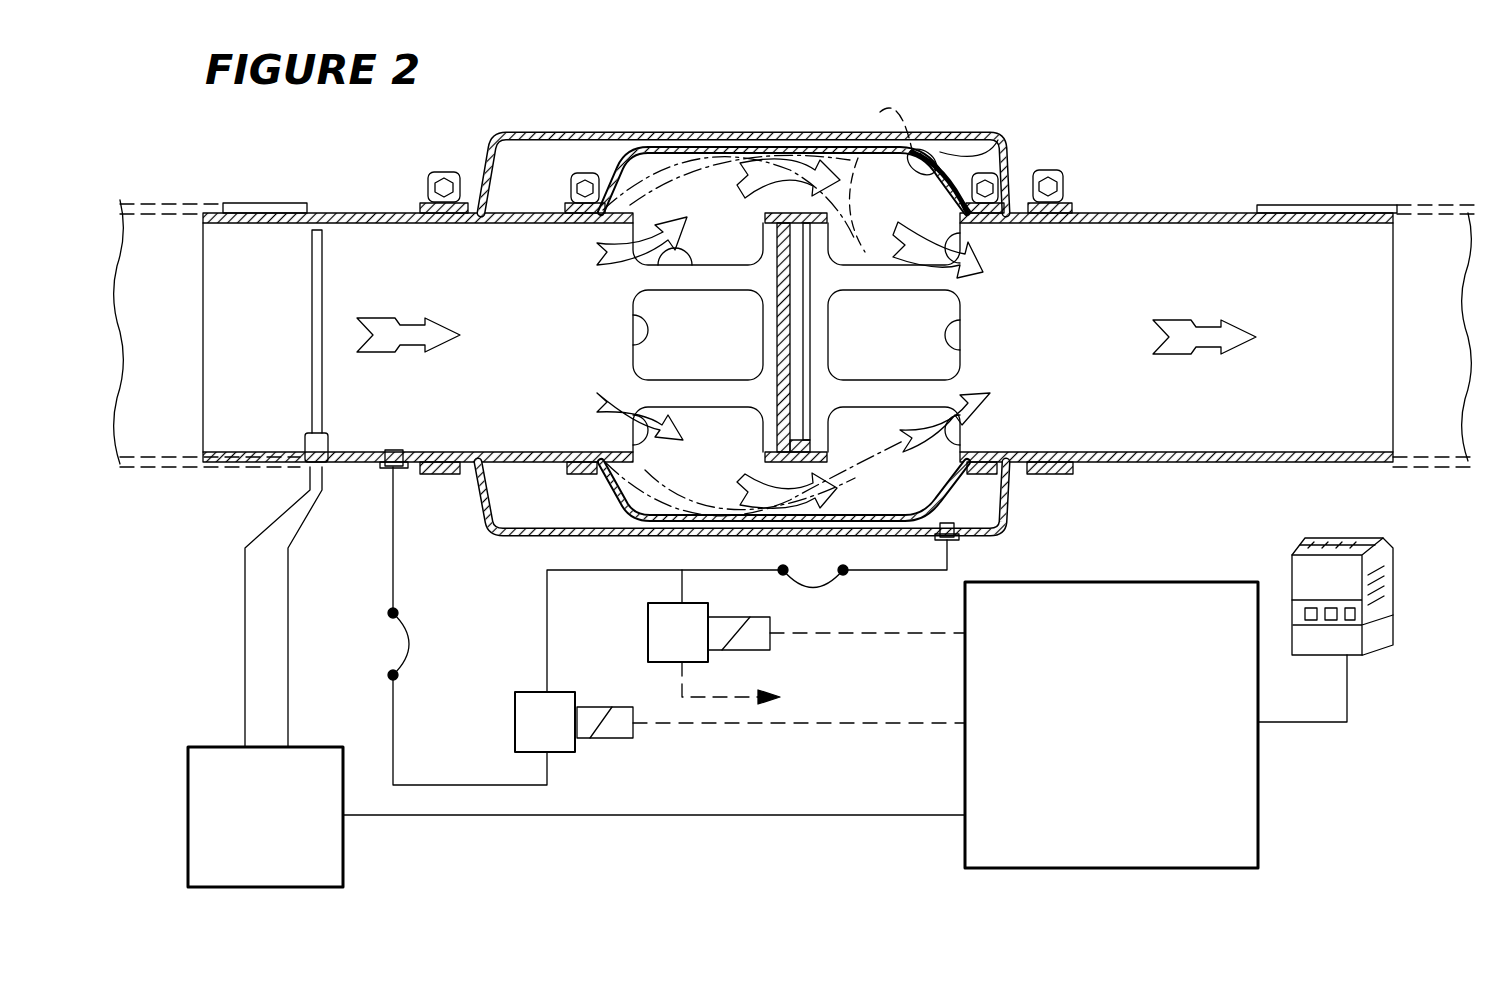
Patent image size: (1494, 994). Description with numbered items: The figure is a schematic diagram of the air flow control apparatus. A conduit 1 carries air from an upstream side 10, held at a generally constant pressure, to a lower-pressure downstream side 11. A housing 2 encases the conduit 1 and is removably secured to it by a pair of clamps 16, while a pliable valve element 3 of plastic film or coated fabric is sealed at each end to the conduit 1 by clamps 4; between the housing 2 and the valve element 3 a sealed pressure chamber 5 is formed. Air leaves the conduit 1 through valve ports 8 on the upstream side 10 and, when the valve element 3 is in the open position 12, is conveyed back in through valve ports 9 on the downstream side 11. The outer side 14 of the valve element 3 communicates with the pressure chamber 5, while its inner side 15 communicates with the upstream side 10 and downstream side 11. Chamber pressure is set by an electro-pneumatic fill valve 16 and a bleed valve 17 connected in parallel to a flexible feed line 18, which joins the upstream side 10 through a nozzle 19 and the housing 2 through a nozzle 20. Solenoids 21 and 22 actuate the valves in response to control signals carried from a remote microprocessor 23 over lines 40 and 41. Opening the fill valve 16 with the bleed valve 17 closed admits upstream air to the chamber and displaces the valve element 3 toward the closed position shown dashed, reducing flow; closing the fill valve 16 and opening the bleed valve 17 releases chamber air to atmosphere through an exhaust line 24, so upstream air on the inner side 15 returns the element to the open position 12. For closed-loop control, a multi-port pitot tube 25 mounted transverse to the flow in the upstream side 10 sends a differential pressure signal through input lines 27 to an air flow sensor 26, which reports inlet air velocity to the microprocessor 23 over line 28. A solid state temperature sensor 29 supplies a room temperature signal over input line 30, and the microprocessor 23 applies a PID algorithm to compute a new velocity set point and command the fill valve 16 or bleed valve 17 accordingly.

The conduit 1 is at (1160, 215).
The housing 2 is at (663, 133).
The valve element 3 is at (603, 210).
The clamps 4 is at (577, 177).
The pressure chamber 5 is at (528, 198).
The valve ports 8 is at (683, 260).
The valve ports 9 is at (963, 243).
The upstream side 10 is at (262, 354).
The downstream side 11 is at (1364, 357).
The open position 12 is at (860, 138).
The outer side 14 is at (940, 152).
The inner side 15 is at (915, 155).
The fill valve 16 is at (437, 170).
The bleed valve 17 is at (648, 640).
The feed line 18 is at (393, 580).
The nozzle 19 is at (385, 470).
The nozzle 20 is at (955, 540).
The electric solenoid 21 is at (597, 740).
The electric solenoid 22 is at (722, 652).
The microprocessor 23 is at (1183, 582).
The exhaust line 24 is at (680, 690).
The multi-port pitot tube 25 is at (313, 395).
The air flow sensor 26 is at (188, 815).
The input lines 27 is at (288, 642).
The line 28 is at (770, 815).
The temperature sensor 29 is at (1395, 608).
The input line 30 is at (1300, 727).
The line 40 is at (944, 727).
The line 41 is at (925, 638).